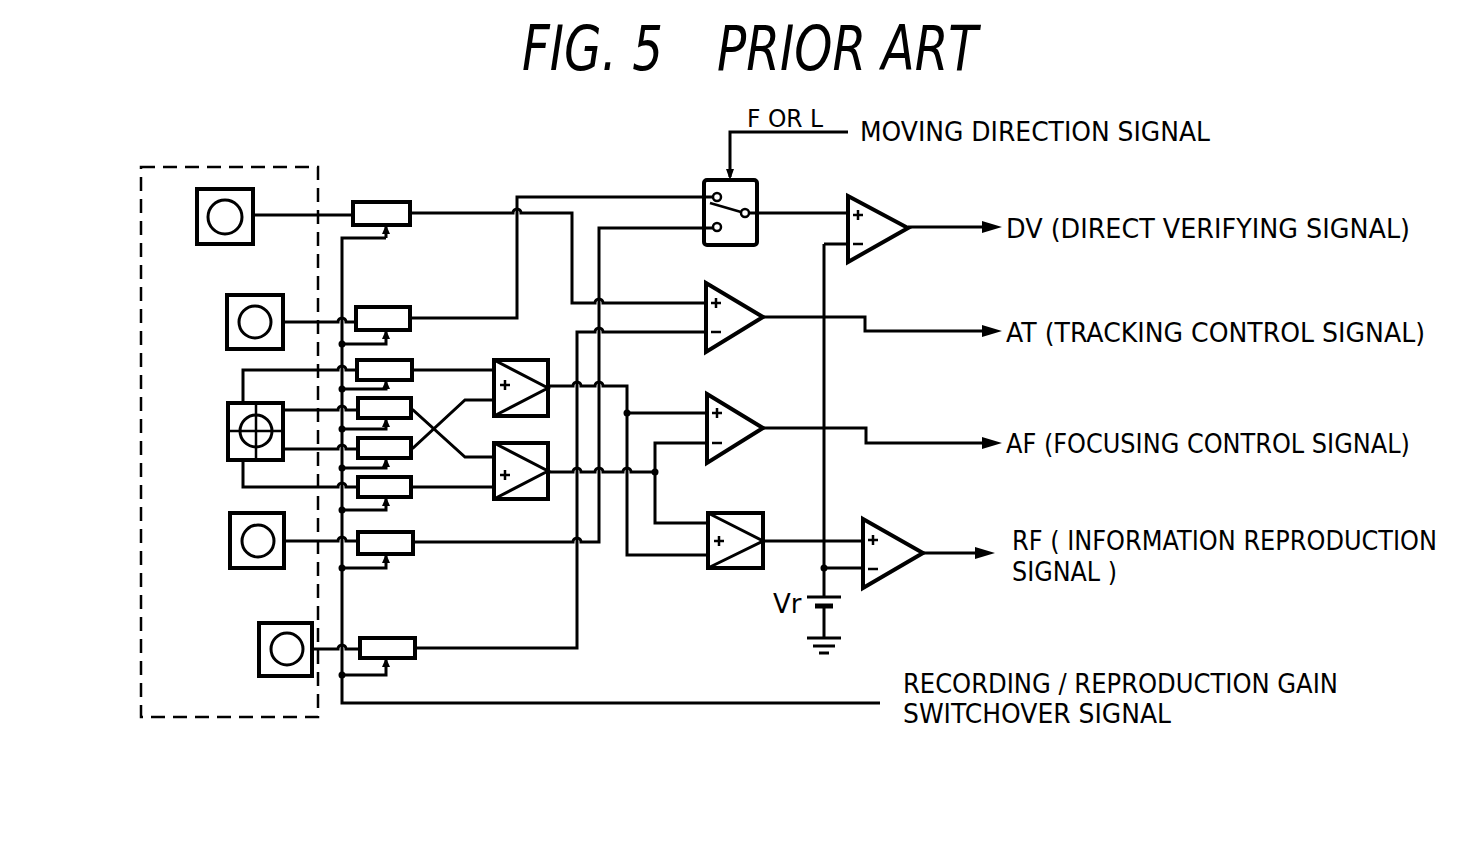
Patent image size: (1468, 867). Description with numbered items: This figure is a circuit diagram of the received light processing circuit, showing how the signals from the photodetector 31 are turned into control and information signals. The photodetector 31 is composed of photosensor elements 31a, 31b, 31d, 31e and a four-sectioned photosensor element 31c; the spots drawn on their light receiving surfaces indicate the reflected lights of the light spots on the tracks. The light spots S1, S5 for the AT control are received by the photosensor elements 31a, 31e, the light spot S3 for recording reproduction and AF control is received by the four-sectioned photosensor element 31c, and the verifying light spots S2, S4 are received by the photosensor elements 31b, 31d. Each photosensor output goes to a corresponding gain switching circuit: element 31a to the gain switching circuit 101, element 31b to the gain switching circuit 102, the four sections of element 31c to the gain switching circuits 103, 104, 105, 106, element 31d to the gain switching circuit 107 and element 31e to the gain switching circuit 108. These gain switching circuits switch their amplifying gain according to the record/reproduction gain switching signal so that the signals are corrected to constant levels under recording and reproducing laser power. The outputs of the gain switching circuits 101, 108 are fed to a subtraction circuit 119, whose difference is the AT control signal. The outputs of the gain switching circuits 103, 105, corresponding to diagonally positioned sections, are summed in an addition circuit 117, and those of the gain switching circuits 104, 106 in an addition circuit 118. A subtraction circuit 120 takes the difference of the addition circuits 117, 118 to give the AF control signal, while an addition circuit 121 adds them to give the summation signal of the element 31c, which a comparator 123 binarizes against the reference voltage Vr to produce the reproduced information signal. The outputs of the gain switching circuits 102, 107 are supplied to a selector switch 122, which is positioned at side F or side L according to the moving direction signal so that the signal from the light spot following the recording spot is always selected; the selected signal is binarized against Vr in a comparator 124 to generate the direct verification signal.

The photodetector 31 is at (256, 167).
The photosensor element 31a is at (197, 230).
The photosensor element 31b is at (227, 340).
The 4-sectioned photosensor element 31c is at (228, 440).
The photosensor element 31d is at (230, 555).
The photosensor element 31e is at (259, 658).
The light spot S1 is at (210, 209).
The light spot S2 is at (240, 320).
The light spot S3 is at (240, 418).
The light spot S4 is at (242, 533).
The light spot S5 is at (272, 640).
The gain switching circuit 101 is at (392, 225).
The gain switching circuit 102 is at (405, 307).
The gain switching circuit 103 is at (405, 360).
The gain switching circuit 104 is at (410, 398).
The gain switching circuit 105 is at (410, 458).
The gain switching circuit 106 is at (410, 497).
The gain switching circuit 107 is at (410, 554).
The gain switching circuit 108 is at (395, 638).
The addition circuit 117 is at (510, 360).
The addition circuit 118 is at (540, 499).
The subtraction circuit 119 is at (735, 283).
The subtraction circuit 120 is at (738, 400).
The addition circuit 121 is at (735, 513).
The selector switch 122 is at (710, 180).
The comparator 123 is at (895, 575).
The comparator 124 is at (885, 250).